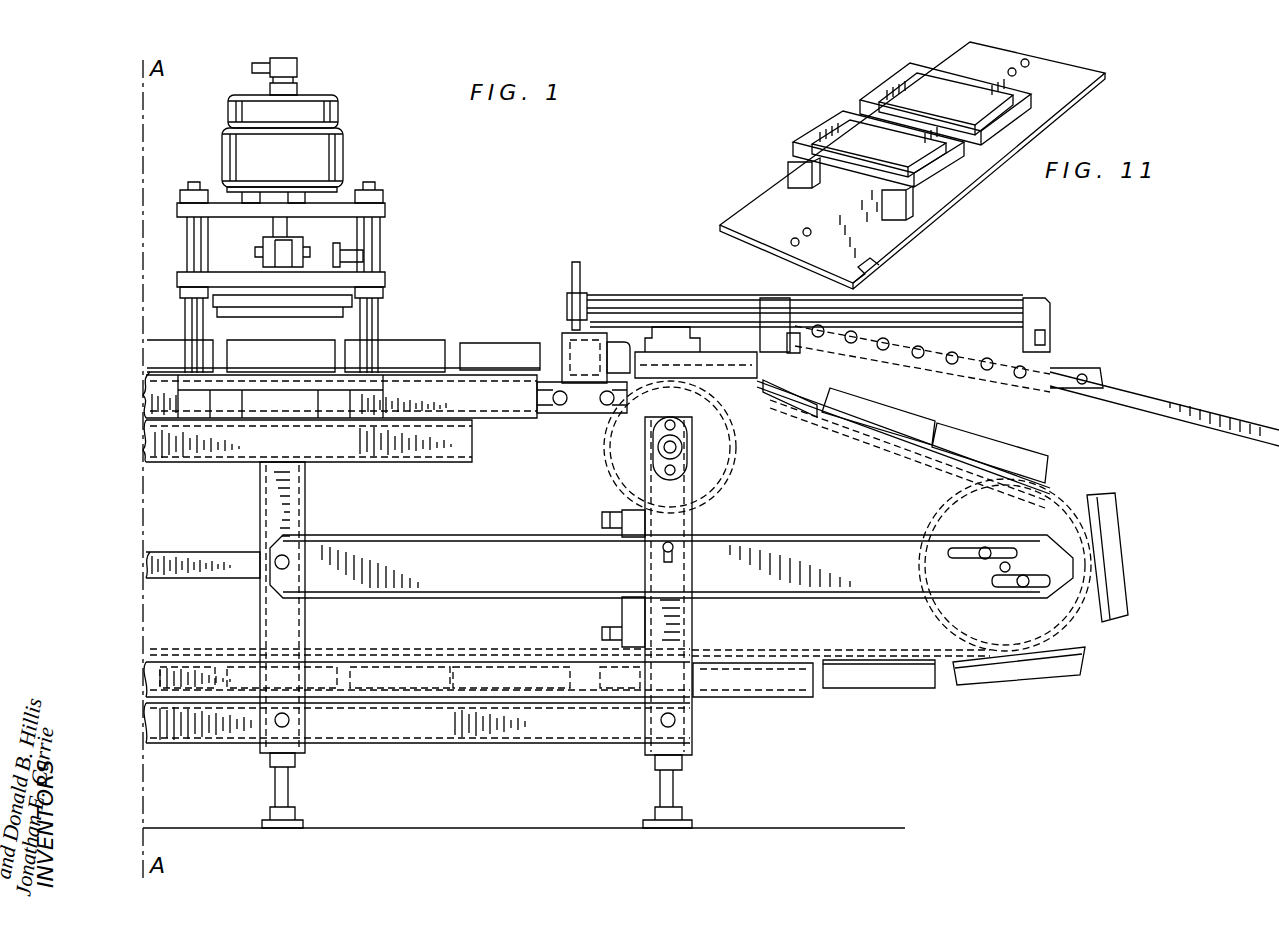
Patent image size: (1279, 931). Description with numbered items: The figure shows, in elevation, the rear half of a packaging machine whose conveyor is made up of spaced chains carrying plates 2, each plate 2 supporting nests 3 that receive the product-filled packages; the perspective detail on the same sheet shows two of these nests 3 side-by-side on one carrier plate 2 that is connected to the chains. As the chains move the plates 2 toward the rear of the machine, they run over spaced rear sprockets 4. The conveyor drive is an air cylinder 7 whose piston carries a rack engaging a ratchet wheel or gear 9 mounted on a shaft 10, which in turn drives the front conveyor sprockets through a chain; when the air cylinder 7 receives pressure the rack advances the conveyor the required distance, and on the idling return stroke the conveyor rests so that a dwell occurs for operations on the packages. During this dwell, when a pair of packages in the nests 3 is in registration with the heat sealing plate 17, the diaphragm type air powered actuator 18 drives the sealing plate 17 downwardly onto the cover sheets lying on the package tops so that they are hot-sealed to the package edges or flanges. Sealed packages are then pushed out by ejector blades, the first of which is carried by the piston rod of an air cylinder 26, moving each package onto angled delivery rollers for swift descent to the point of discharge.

In FIG. 1, the plates 2 is at (505, 388).
In FIG. 1, the nests 3 is at (292, 366).
In FIG. 11, the nests 3 is at (782, 223).
In FIG. 1, the rear sprockets 4 is at (513, 212).
In FIG. 1, the air cylinder 7 is at (633, 213).
In FIG. 1, the ratchet wheel or gear 9 is at (318, 163).
In FIG. 1, the shaft 10 is at (687, 165).
In FIG. 1, the heat sealing plate 17 is at (328, 314).
In FIG. 1, the diaphragm type air powered actuator 18 is at (343, 160).
In FIG. 1, the air cylinder 26 is at (930, 317).